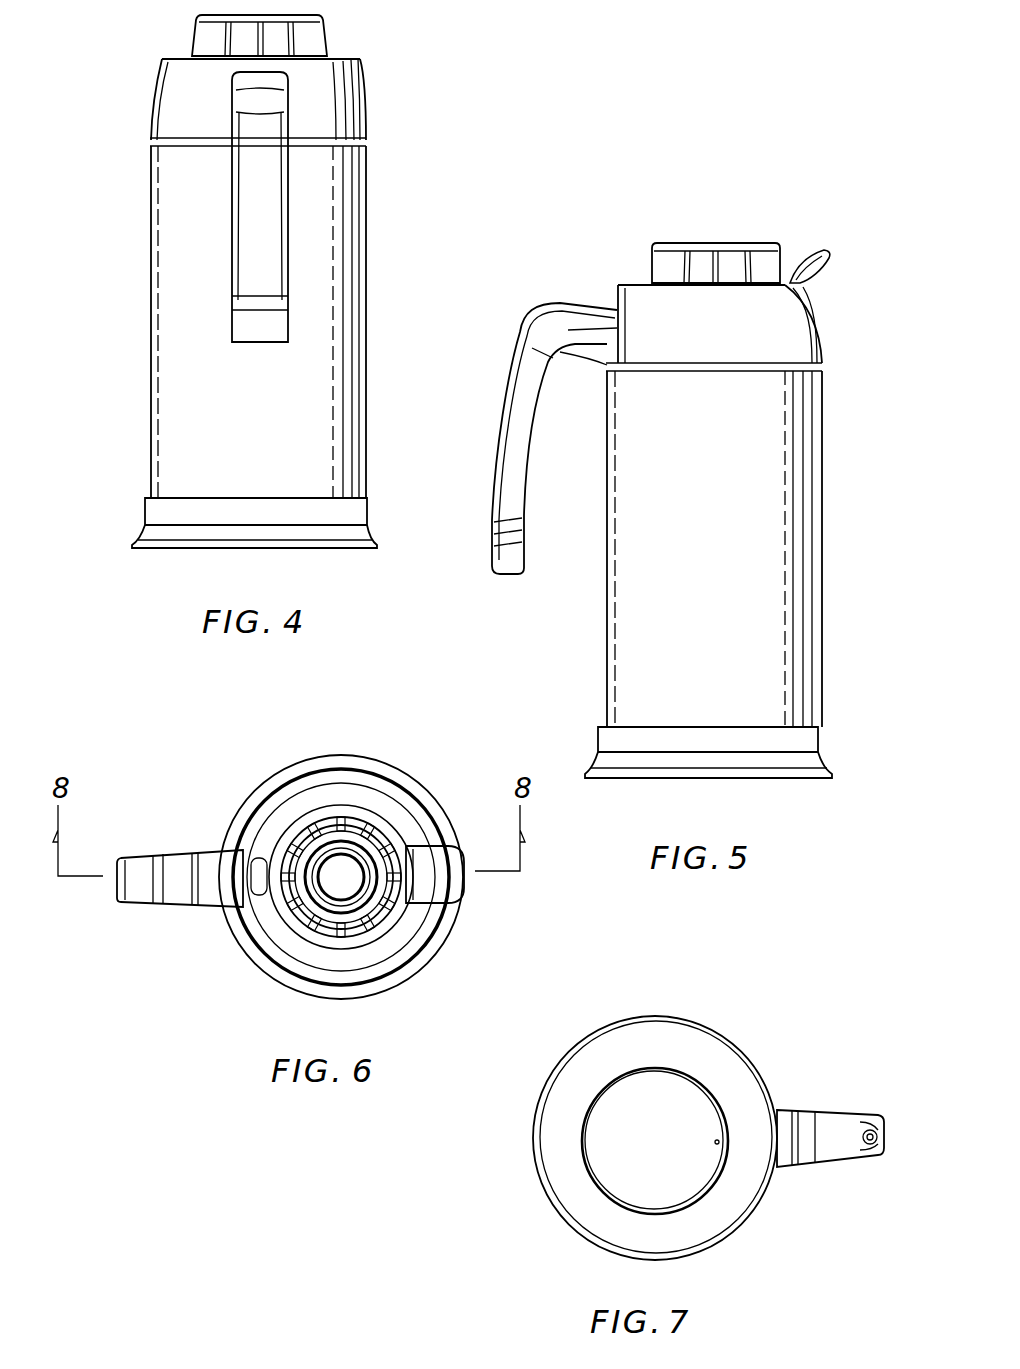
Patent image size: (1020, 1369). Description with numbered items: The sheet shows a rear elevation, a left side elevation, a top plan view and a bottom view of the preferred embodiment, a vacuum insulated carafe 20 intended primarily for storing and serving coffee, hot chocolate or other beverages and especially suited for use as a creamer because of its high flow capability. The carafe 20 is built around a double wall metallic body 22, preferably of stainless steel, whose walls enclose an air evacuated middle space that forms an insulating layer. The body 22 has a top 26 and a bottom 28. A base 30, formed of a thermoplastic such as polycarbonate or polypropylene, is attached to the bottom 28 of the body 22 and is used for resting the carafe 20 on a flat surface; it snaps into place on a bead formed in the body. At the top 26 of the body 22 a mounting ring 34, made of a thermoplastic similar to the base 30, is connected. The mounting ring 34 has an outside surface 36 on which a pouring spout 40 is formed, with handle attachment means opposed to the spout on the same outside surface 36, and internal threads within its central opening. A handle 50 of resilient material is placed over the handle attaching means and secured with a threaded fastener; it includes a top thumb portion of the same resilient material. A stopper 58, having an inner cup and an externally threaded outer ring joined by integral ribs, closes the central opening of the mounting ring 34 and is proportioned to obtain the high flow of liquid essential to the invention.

In FIG. 4, the vacuum insulated carafe 20 is at (396, 239).
In FIG. 5, the vacuum insulated carafe 20 is at (838, 512).
In FIG. 6, the vacuum insulated carafe 20 is at (224, 948).
In FIG. 7, the vacuum insulated carafe 20 is at (536, 1208).
In FIG. 4, the double wall metallic body 22 is at (150, 406).
In FIG. 5, the double wall metallic body 22 is at (820, 611).
In FIG. 6, the top 26 is at (355, 770).
In FIG. 7, the bottom 28 is at (664, 1084).
In FIG. 4, the base 30 is at (342, 548).
In FIG. 5, the base 30 is at (785, 778).
In FIG. 7, the base 30 is at (752, 1205).
In FIG. 4, the mounting ring 34 is at (158, 80).
In FIG. 5, the mounting ring 34 is at (618, 290).
In FIG. 4, the outside surface 36 is at (362, 116).
In FIG. 5, the outside surface 36 is at (822, 340).
In FIG. 6, the outside surface 36 is at (388, 975).
In FIG. 5, the pouring spout 40 is at (825, 254).
In FIG. 6, the pouring spout 40 is at (455, 905).
In FIG. 4, the handle 50 is at (235, 222).
In FIG. 5, the handle 50 is at (497, 415).
In FIG. 6, the handle 50 is at (175, 850).
In FIG. 7, the handle 50 is at (843, 1112).
In FIG. 4, the stopper 58 is at (355, 56).
In FIG. 5, the stopper 58 is at (725, 243).
In FIG. 6, the stopper 58 is at (282, 966).